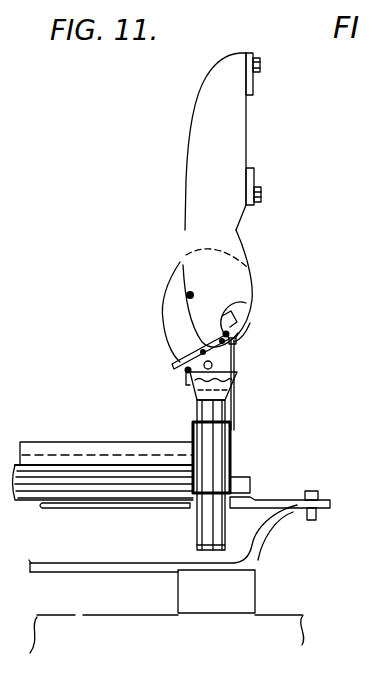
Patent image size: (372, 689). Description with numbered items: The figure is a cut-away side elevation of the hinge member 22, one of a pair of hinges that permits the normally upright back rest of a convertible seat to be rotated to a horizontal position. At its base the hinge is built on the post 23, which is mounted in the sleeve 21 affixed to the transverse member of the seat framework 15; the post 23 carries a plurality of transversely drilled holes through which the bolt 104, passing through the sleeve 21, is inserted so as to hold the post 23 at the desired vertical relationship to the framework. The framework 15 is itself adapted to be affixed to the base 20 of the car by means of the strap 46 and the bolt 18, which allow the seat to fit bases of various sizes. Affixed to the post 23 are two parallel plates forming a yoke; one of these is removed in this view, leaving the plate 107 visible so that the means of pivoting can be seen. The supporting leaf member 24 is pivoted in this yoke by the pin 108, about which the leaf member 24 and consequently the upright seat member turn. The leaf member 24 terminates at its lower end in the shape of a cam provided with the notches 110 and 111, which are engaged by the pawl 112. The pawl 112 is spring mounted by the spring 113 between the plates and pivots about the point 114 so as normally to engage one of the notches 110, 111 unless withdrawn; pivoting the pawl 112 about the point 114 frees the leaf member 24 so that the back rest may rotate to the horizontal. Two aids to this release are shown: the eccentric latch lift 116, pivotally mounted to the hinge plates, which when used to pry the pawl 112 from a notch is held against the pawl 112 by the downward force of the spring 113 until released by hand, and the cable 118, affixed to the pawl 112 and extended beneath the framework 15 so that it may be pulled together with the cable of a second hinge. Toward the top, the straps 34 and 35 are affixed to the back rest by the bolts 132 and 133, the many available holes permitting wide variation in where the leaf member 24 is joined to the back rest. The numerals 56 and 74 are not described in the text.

The framework 15 is at (62, 504).
The bolt 18 is at (318, 494).
The base 20 is at (262, 543).
The sleeve 21 is at (231, 472).
The hinge member 22 is at (170, 275).
The post 23 is at (198, 537).
The leaf member 24 is at (185, 180).
The strap 34 is at (254, 88).
The strap 35 is at (254, 180).
The strap 46 is at (278, 500).
The rail body 56 is at (110, 500).
The rail 74 is at (15, 470).
The bolt 104 is at (232, 442).
The plate 107 is at (245, 345).
The pin 108 is at (186, 295).
The notch 110 is at (246, 308).
The notch 111 is at (240, 325).
The pawl 112 is at (180, 357).
The spring 113 is at (214, 365).
The pivot point 114 is at (183, 366).
The eccentric latch lift 116 is at (182, 378).
The cable 118 is at (235, 407).
The bolt 132 is at (260, 64).
The bolt 133 is at (261, 197).